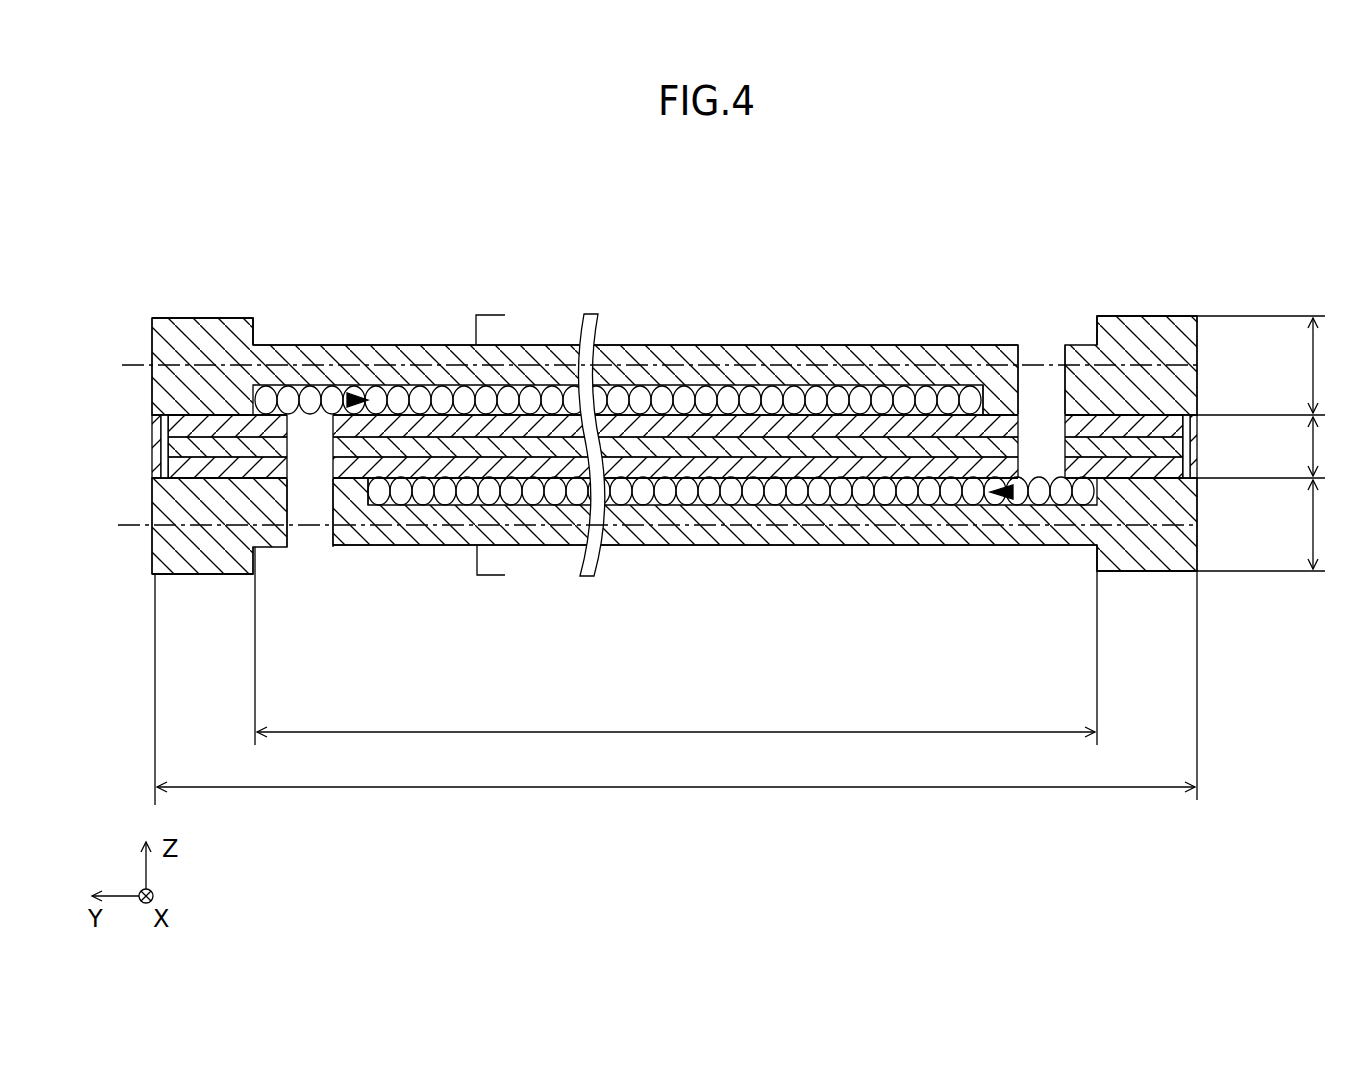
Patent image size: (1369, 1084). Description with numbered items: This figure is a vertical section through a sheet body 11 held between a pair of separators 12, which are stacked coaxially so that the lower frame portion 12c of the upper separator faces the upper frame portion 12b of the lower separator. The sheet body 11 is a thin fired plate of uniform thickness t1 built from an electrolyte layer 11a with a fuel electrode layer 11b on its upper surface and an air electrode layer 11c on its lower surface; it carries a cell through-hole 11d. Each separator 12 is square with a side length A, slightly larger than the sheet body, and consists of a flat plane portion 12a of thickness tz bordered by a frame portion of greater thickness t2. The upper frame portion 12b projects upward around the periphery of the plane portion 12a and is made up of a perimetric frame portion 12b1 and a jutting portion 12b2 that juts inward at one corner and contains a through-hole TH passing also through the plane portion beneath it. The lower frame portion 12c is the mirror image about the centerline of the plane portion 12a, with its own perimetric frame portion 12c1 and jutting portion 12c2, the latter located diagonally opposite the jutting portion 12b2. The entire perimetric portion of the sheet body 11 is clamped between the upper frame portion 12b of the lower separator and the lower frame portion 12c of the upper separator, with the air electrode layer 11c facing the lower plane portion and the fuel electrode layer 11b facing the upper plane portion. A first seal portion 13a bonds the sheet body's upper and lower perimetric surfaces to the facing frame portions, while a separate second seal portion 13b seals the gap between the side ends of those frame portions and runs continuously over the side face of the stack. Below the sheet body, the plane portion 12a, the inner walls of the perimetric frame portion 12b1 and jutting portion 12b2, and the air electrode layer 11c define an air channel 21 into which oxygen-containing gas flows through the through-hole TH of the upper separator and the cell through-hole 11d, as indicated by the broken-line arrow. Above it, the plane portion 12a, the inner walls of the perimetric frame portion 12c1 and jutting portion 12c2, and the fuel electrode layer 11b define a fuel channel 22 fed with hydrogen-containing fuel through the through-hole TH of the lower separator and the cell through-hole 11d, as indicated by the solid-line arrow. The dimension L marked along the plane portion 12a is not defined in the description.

The sheet body 11 is at (724, 396).
The electrolyte layer 11a is at (833, 443).
The fuel electrode layer 11b is at (787, 427).
The air electrode layer 11c is at (895, 462).
The cell through-hole 11d is at (292, 447).
The separator 12 is at (697, 220).
The plane portion 12a is at (640, 345).
The upper frame portion 12b is at (243, 268).
The perimetric frame portion 12b1 is at (190, 318).
The jutting portion 12b2 is at (340, 487).
The lower frame portion 12c is at (137, 414).
The perimetric frame portion 12c1 is at (178, 412).
The jutting portion 12c2 is at (1000, 397).
The first seal portion 13a is at (203, 410).
The second seal portion 13b is at (150, 455).
The air channel 21 is at (679, 502).
The fuel channel 22 is at (661, 412).
The through-hole TH is at (347, 400).
The thickness of the plane portion tz is at (490, 432).
The thickness of the sheet body t1 is at (1269, 446).
The thickness of the frame portion t2 is at (1269, 443).
The plate length L is at (676, 645).
The length of one side of the separator A is at (676, 688).